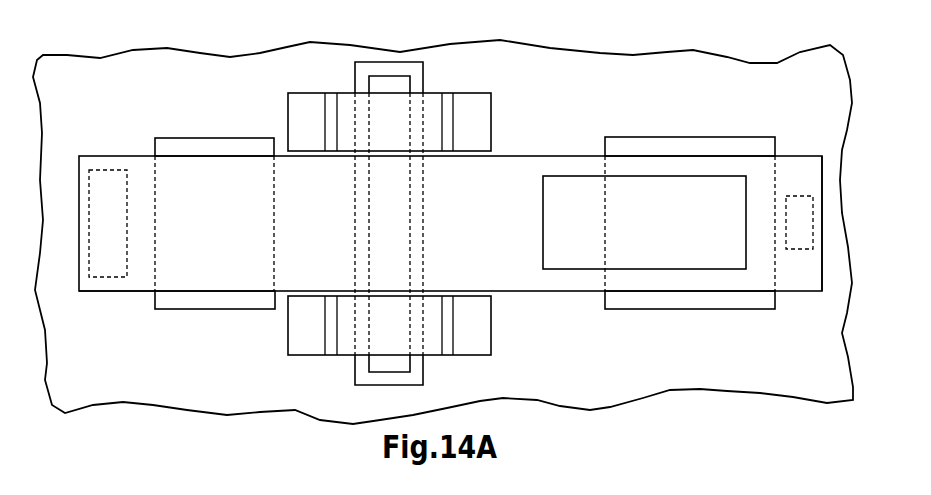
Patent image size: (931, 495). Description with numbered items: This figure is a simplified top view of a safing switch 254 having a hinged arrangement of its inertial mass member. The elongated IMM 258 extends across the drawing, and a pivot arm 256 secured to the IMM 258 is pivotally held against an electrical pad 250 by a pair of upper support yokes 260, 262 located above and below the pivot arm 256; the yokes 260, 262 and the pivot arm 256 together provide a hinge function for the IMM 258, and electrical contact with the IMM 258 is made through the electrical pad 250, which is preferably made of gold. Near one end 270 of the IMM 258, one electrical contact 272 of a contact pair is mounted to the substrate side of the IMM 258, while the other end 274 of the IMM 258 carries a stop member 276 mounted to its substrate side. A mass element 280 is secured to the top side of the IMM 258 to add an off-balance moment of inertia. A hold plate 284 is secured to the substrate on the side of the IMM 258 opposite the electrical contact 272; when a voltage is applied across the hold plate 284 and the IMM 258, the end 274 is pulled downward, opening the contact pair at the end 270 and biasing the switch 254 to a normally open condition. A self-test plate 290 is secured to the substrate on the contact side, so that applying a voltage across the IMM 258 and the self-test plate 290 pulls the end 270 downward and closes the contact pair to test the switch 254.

The electrical pad 250 is at (397, 387).
The switch 254 is at (704, 110).
The pivot arm 256 is at (357, 359).
The IMM 258 is at (500, 242).
The upper support yoke 260 is at (478, 323).
The upper support yoke 262 is at (302, 120).
The end of the IMM 270 is at (79, 205).
The electrical contact 272 is at (112, 234).
The other end of the IMM 274 is at (822, 257).
The stop member 276 is at (800, 190).
The mass element 280 is at (680, 248).
The hold plate 284 is at (733, 148).
The self-test plate 290 is at (241, 137).